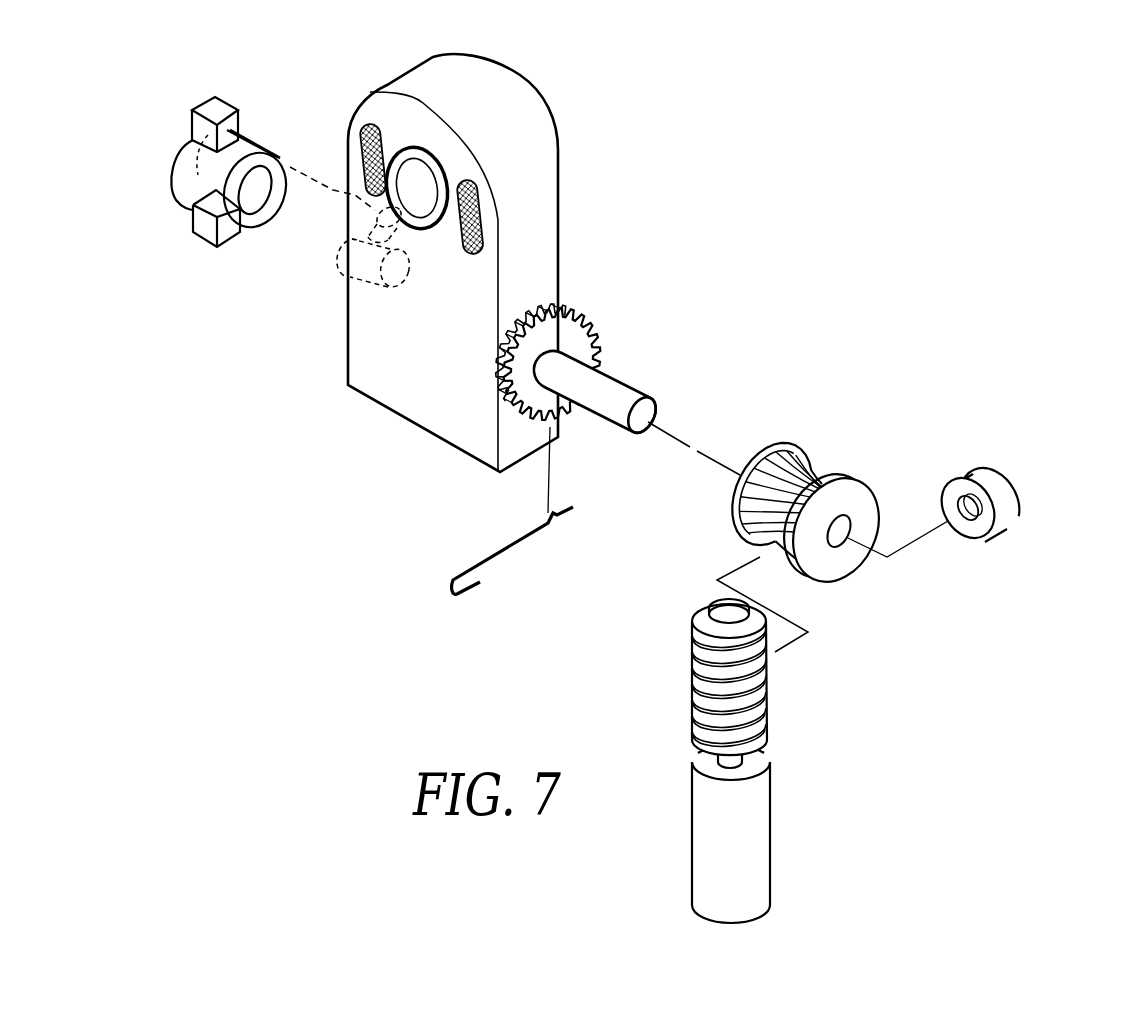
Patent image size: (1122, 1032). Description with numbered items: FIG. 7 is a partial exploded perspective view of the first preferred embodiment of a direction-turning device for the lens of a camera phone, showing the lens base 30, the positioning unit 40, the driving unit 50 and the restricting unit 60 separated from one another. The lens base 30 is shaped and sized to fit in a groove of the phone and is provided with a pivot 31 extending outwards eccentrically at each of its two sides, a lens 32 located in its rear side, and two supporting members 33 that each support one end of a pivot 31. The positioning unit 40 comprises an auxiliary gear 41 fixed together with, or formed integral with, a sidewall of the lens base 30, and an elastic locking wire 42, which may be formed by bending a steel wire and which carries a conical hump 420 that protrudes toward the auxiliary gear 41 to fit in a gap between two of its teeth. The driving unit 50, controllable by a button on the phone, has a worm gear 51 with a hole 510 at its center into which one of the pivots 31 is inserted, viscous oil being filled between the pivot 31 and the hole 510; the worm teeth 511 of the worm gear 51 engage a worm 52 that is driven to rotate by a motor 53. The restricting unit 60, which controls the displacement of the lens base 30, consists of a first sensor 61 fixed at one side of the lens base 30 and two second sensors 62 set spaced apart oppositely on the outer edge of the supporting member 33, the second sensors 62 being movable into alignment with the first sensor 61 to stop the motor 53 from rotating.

The lens base 30 is at (532, 200).
The pivot 31 is at (365, 263).
The lens 32 is at (416, 187).
The supporting member 33 is at (193, 175).
The positioning unit 40 is at (373, 493).
The auxiliary gear 41 is at (530, 390).
The elastic locking wire 42 is at (490, 556).
The conical hump 420 is at (549, 516).
The driving unit 50 is at (885, 670).
The worm gear 51 is at (775, 509).
The hole 510 is at (841, 534).
The worm teeth 511 is at (765, 513).
The worm 52 is at (753, 703).
The motor 53 is at (738, 830).
The restricting unit 60 is at (170, 102).
The first sensor 61 is at (375, 210).
The second sensor 62 is at (198, 127).